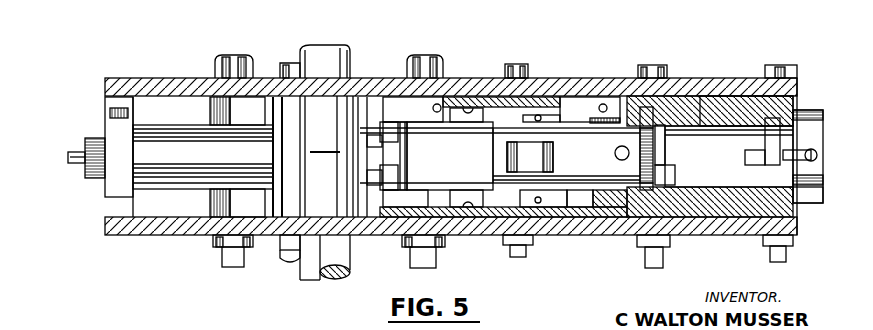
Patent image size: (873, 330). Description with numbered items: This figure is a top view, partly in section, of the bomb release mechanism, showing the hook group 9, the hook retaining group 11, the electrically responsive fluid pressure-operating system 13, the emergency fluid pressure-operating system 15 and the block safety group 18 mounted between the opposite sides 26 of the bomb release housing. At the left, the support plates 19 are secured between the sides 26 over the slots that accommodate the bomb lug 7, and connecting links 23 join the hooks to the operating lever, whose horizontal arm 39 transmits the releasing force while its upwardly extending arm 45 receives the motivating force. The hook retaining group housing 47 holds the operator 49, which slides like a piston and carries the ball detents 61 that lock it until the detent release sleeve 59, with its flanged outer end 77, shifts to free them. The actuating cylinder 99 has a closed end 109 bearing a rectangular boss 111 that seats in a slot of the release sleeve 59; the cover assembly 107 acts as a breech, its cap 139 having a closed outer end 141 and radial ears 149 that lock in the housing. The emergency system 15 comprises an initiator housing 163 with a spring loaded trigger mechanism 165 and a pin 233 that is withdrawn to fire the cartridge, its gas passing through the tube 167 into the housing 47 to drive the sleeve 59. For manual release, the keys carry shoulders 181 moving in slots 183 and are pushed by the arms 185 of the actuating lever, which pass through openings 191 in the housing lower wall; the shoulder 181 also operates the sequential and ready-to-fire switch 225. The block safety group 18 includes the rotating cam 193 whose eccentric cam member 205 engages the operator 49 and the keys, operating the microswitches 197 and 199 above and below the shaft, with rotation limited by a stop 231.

The bomb lug 7 is at (398, 200).
The hook group 9 is at (178, 68).
The hook retaining group 11 is at (560, 56).
The electrically responsive fluid pressure-operating system 13 is at (718, 105).
The emergency fluid pressure-operating system 15 is at (185, 195).
The block safety group 18 is at (398, 42).
The support plates 19 is at (255, 107).
The connecting links 23 is at (366, 133).
The sides of the bomb release housing 26 is at (148, 88).
The arm of the operating lever 39 is at (372, 200).
The arm of the operating lever 45 is at (533, 182).
The hook retaining group housing 47 is at (745, 105).
The operator 49 is at (585, 157).
The detent release sleeve 59 is at (645, 185).
The ball detents 61 is at (612, 150).
The outer end of the detent release sleeve 77 is at (648, 106).
The actuating cylinder 99 is at (710, 165).
The cover assembly 107 is at (804, 208).
The closed end of the actuating cylinder 109 is at (670, 140).
The boss 111 is at (672, 190).
The cap 139 is at (805, 133).
The outer end of the cap 141 is at (825, 165).
The ears 149 is at (772, 140).
The initiator housing 163 is at (160, 155).
The trigger mechanism 165 is at (74, 180).
The tube 167 is at (328, 155).
The shoulder 181 is at (582, 112).
The slot 183 is at (466, 108).
The arms 185 is at (598, 115).
The openings 191 is at (540, 114).
The rotating cam 193 is at (455, 152).
The microswitch 197 is at (403, 103).
The microswitch 199 is at (396, 190).
The cam member 205 is at (422, 190).
The sequential and ready-to-fire switch 225 is at (573, 105).
The stop 231 is at (323, 112).
The pin 233 is at (76, 151).